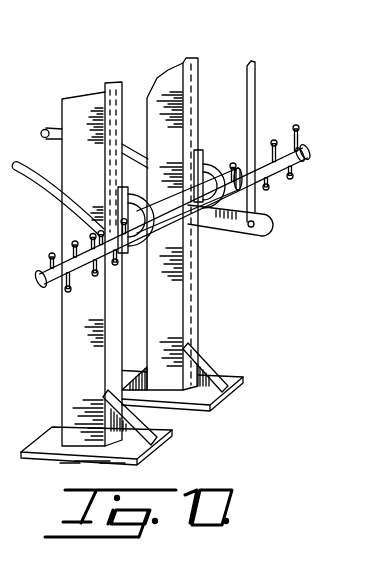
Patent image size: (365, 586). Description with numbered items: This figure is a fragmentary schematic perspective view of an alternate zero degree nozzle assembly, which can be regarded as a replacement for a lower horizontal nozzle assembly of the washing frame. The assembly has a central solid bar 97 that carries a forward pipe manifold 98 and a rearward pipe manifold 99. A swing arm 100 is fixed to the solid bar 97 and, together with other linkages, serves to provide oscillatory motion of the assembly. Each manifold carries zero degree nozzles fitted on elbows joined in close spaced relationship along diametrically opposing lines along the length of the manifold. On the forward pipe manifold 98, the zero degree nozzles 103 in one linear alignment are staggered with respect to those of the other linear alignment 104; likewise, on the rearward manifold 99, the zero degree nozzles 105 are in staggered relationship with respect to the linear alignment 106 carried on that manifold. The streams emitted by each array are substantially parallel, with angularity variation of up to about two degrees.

The central solid bar 97 is at (178, 240).
The forward pipe manifold 98 is at (76, 270).
The rearward pipe manifold 99 is at (304, 157).
The swing arm 100 is at (236, 230).
The zero degree nozzles 103 is at (50, 253).
The linear alignment of zero degree nozzles 104 is at (97, 276).
The zero degree nozzles 105 is at (272, 140).
The linear alignment of zero degree nozzles 106 is at (273, 187).